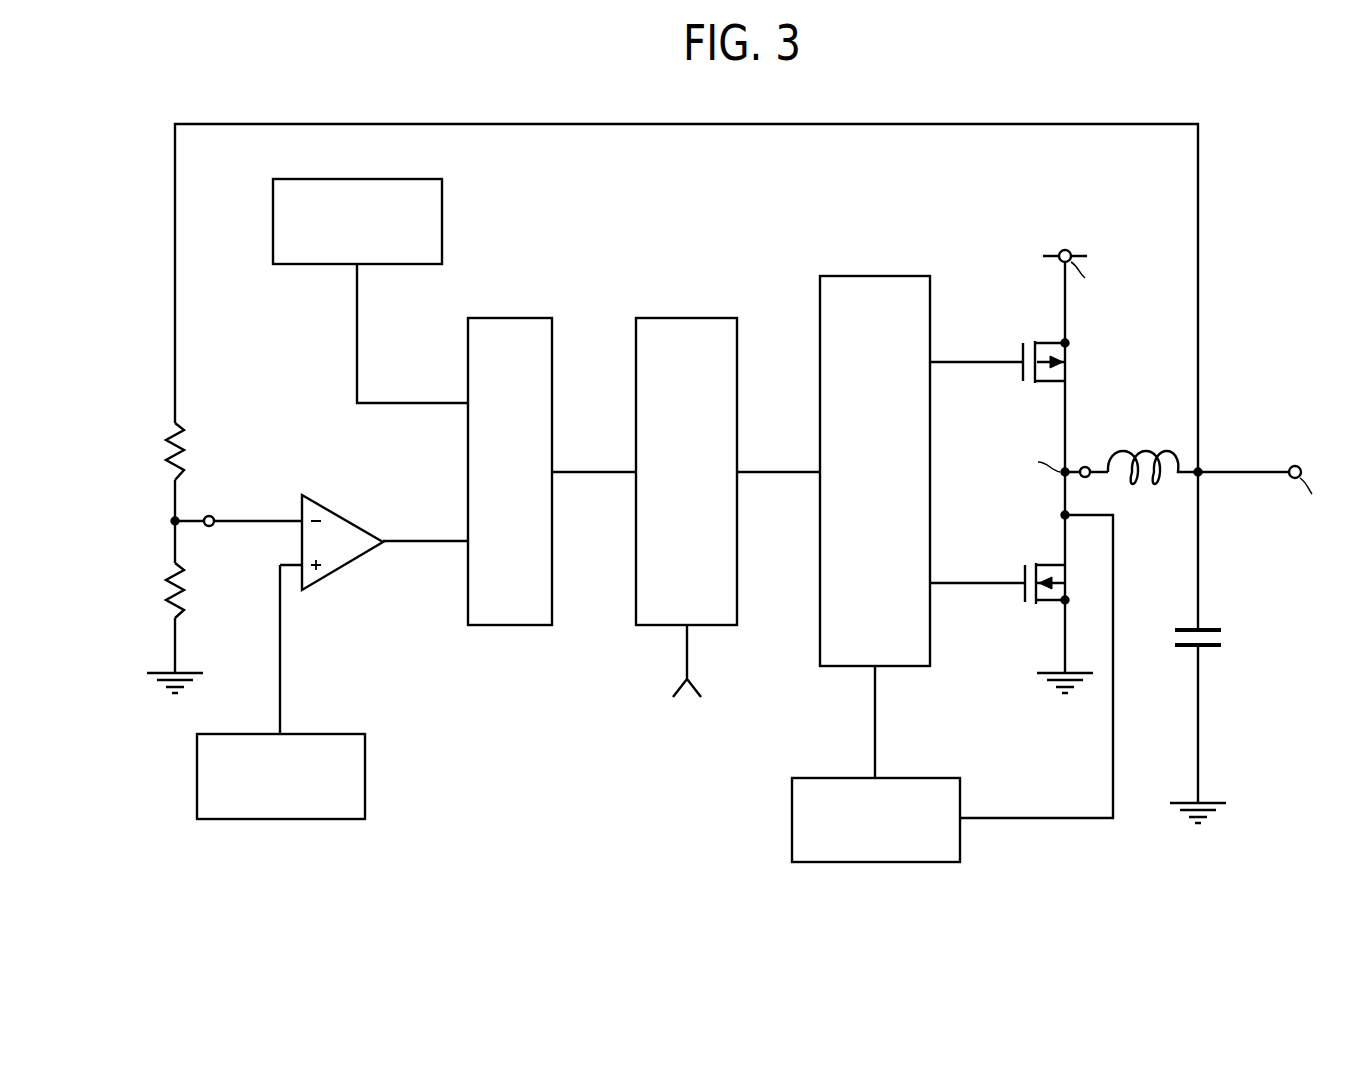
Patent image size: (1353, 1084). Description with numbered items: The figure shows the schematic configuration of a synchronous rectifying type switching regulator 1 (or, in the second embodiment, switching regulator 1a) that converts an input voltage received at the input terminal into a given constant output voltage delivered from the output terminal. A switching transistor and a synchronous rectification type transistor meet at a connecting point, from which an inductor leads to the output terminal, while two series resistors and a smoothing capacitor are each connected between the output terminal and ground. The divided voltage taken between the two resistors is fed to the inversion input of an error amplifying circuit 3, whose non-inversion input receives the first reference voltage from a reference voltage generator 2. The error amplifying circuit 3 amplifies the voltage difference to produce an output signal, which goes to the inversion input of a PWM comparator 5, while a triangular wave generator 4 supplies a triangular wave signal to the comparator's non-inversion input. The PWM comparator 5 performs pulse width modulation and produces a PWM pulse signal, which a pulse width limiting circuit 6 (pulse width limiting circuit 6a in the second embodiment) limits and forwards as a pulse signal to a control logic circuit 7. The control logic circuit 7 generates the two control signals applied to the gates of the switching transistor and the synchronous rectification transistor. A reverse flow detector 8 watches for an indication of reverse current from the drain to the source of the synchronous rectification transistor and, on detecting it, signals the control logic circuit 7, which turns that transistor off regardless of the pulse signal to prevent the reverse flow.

The switching regulator 1 is at (739, 467).
The switching regulator 1a is at (1220, 102).
The reference voltage generator 2 is at (366, 746).
The error amplifying circuit 3 is at (360, 525).
The triangular wave generator 4 is at (416, 179).
The PWM comparator 5 is at (546, 304).
The pulse width limiting circuit 6 is at (698, 451).
The pulse width limiting circuit 6a is at (719, 318).
The control logic circuit 7 is at (914, 276).
The reverse flow detector 8 is at (933, 778).